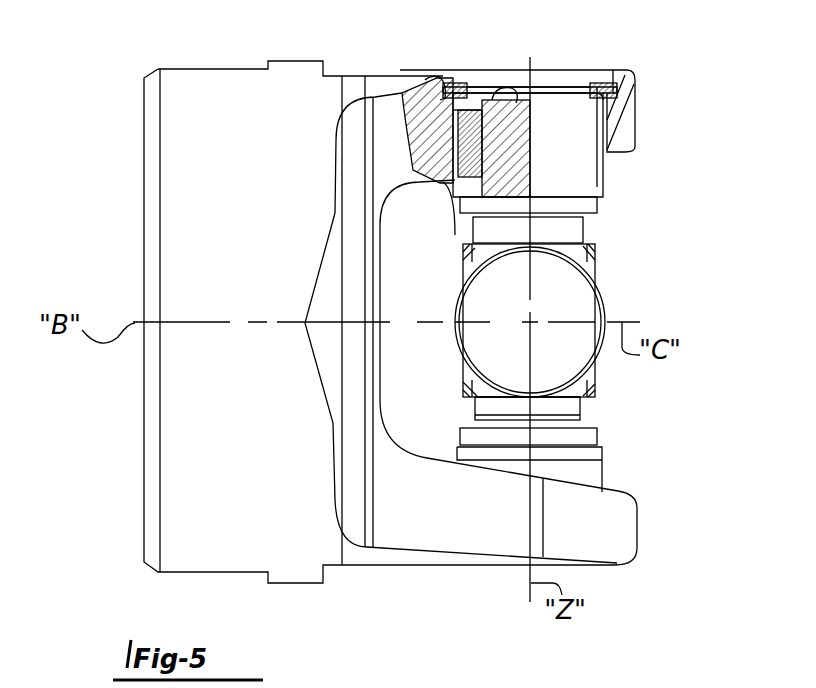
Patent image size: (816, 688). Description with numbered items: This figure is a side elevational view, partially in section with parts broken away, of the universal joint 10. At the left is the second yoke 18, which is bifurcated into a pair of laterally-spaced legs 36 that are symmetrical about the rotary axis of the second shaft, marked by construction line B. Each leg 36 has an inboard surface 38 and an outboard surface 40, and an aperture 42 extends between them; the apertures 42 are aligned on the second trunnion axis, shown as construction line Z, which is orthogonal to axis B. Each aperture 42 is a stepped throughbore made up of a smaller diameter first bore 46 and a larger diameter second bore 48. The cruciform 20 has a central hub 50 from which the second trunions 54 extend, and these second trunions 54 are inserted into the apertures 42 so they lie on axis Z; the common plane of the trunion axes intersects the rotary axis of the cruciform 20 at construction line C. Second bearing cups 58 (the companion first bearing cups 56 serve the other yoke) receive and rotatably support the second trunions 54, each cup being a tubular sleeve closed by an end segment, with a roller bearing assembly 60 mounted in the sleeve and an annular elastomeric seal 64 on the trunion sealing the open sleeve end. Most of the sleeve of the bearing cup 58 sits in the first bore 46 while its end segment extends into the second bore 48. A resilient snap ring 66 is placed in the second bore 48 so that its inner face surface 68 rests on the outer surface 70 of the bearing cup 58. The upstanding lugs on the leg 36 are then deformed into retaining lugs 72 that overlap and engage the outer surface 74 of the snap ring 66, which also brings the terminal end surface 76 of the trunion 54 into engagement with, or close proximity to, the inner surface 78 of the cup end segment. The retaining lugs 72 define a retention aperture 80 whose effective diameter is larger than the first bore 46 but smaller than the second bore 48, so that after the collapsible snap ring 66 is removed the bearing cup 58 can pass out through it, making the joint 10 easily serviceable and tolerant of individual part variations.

The universal joint 10 is at (655, 297).
The second yoke 18 is at (352, 64).
The cruciform 20 is at (597, 264).
The legs 36 is at (634, 128).
The inboard surface 38 is at (445, 200).
The outboard surface 40 is at (422, 72).
The aperture 42 is at (623, 70).
The first bore 46 is at (603, 145).
The second bore 48 is at (535, 150).
The central hub 50 is at (595, 378).
The second trunions 54 is at (598, 205).
The first bearing cups 56 is at (480, 286).
The second bearing cups 58 is at (453, 232).
The roller bearing assembly 60 is at (515, 125).
The annular elastomeric seal 64 is at (585, 230).
The snap ring 66 is at (490, 85).
The inner face surface 68 is at (435, 78).
The outer surface 70 is at (525, 100).
The retaining lugs 72 is at (447, 82).
The outer surface 74 is at (478, 72).
The terminal end surface 76 is at (535, 83).
The inner surface 78 is at (603, 83).
The retention aperture 80 is at (467, 62).